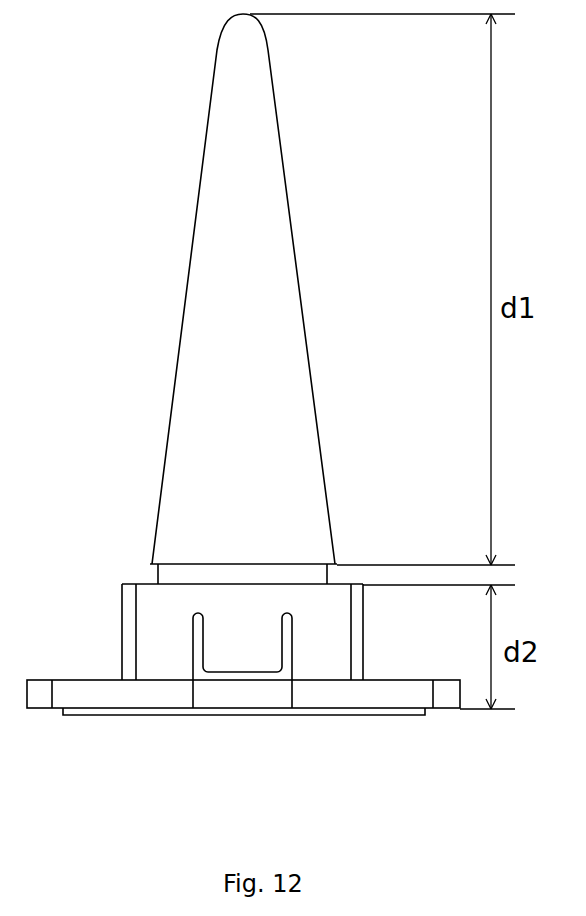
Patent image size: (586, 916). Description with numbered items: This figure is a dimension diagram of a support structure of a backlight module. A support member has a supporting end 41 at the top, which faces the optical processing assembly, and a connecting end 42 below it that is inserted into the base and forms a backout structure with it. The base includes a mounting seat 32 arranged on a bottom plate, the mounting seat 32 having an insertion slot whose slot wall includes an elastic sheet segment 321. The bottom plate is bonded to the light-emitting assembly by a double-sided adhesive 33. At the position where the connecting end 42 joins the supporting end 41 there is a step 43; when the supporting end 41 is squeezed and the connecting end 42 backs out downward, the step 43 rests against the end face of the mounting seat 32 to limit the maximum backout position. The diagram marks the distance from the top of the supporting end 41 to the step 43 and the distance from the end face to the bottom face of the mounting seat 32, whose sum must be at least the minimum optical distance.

The supporting end 41 is at (200, 333).
The connecting end 42 is at (173, 572).
The mounting seat 32 is at (157, 618).
The elastic sheet segment 321 is at (215, 650).
The step 43 is at (286, 569).
The double-sided adhesive 33 is at (312, 715).